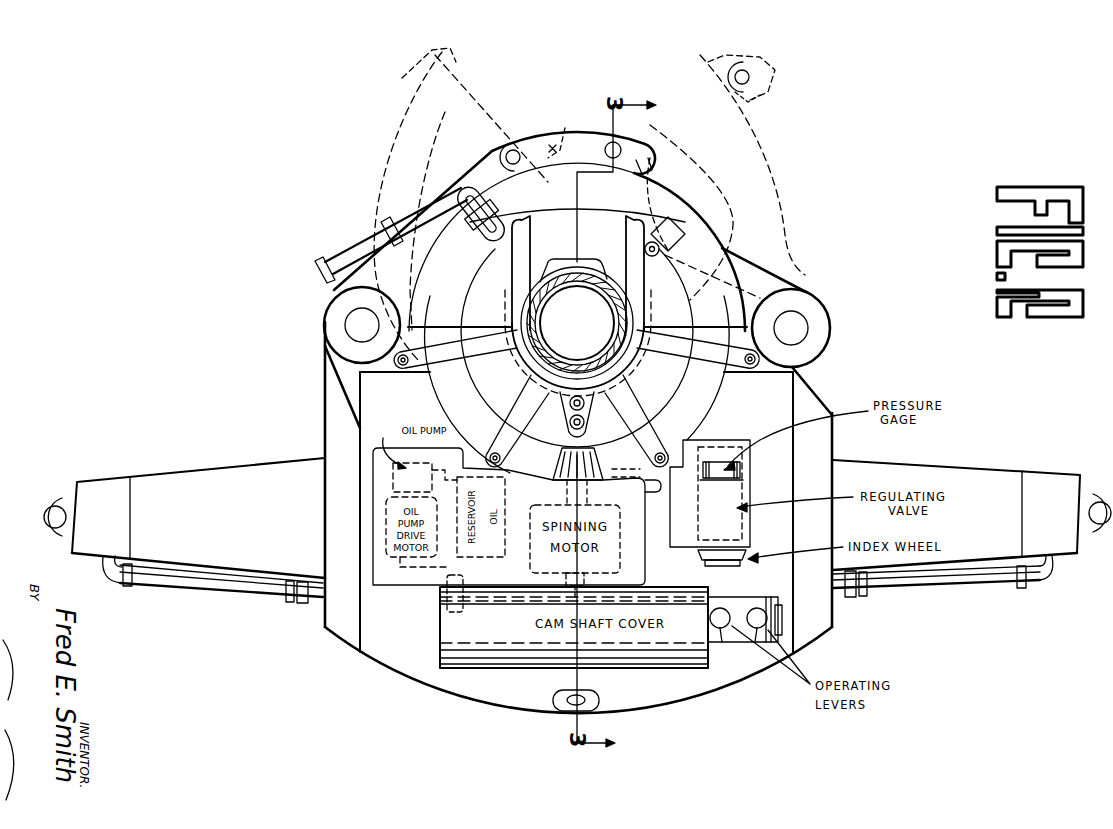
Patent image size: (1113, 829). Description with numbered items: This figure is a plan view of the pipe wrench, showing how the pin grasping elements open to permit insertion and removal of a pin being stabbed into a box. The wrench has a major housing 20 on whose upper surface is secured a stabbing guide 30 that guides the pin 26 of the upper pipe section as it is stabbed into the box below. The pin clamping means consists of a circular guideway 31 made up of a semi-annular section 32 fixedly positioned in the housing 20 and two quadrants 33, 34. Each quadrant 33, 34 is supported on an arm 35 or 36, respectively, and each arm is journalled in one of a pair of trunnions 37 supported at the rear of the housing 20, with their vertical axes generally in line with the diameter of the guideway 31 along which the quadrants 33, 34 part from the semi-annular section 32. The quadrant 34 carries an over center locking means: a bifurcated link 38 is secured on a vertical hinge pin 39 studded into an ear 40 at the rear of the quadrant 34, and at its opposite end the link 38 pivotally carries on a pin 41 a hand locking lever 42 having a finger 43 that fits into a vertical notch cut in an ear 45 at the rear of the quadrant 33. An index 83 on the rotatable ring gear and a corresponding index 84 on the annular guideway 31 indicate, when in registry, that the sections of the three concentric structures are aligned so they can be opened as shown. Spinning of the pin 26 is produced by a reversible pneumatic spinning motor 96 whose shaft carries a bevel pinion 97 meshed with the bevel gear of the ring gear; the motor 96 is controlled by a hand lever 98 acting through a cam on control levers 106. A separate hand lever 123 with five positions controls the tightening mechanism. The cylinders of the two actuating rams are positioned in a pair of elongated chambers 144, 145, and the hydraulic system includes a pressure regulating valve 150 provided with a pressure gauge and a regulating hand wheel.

The major housing 20 is at (318, 409).
The pin end 26 is at (565, 305).
The stabbing guide 30 is at (640, 368).
The circular guideway 31 is at (694, 401).
The semi-annular section 32 is at (400, 218).
The quadrant 33 is at (400, 112).
The quadrant 34 is at (778, 154).
The arm 35 is at (378, 252).
The arm 36 is at (790, 280).
The trunnions 37 is at (325, 327).
The bifurcated link 38 is at (564, 128).
The vertical hinge pin 39 is at (620, 146).
The ear 40 is at (652, 160).
The pin 41 is at (513, 150).
The hand locking lever 42 is at (457, 186).
The finger 43 is at (552, 143).
The ear 45 is at (433, 63).
The index 83 is at (590, 413).
The index 84 is at (605, 452).
The pneumatic spinning motor 96 is at (640, 572).
The bevel pinion 97 is at (632, 472).
The hand lever 98 is at (776, 608).
The control levers 106 is at (545, 584).
The hand lever 123 is at (720, 642).
The elongated chamber 144 is at (200, 478).
The elongated chamber 145 is at (985, 478).
The pressure regulating valve 150 is at (745, 520).